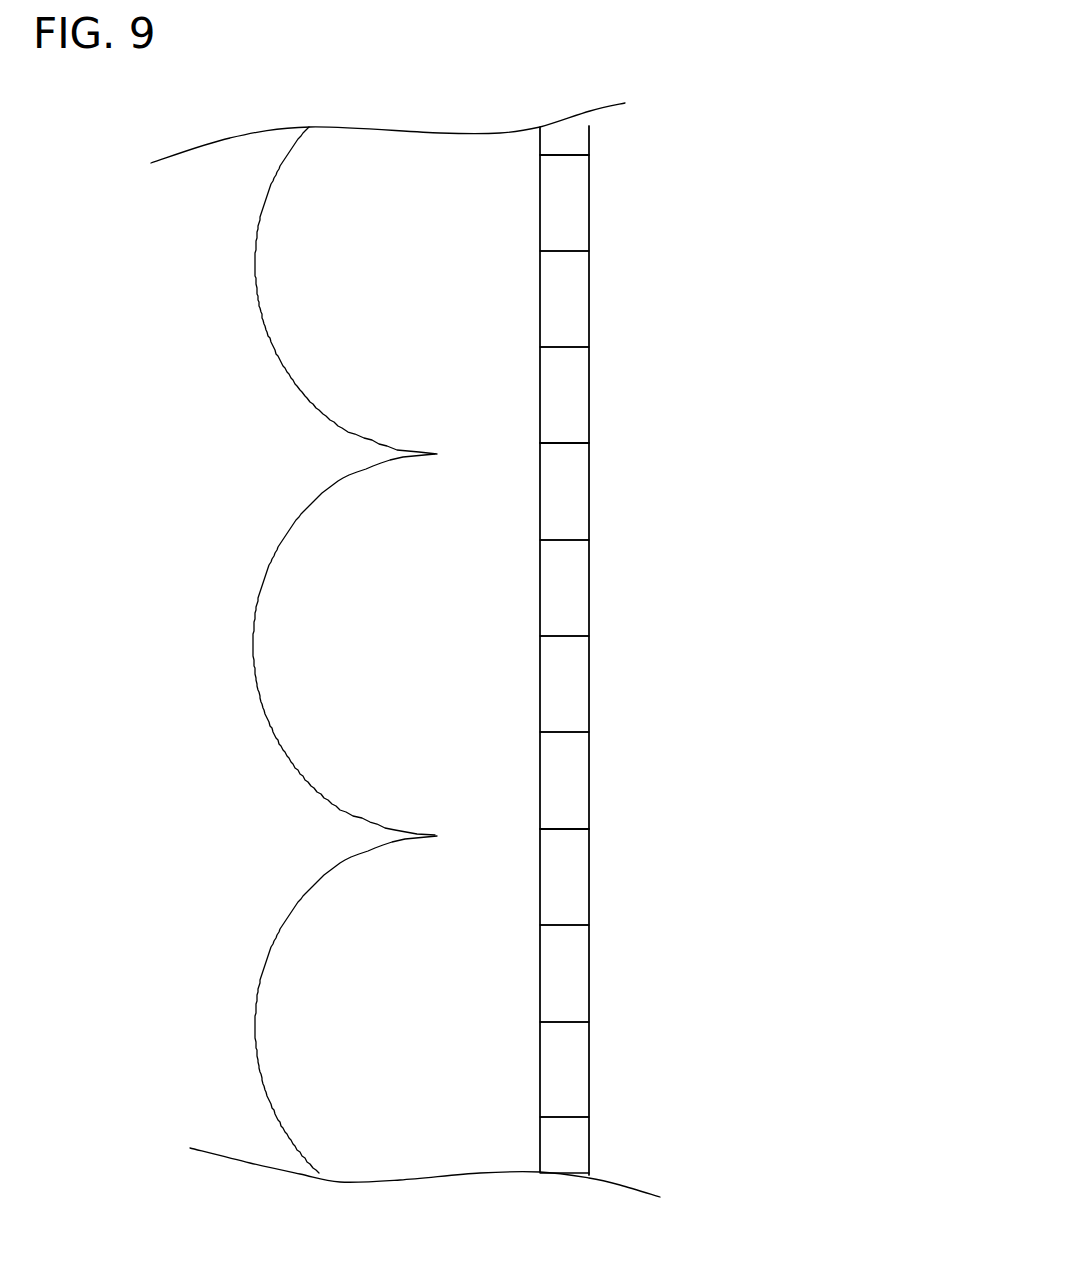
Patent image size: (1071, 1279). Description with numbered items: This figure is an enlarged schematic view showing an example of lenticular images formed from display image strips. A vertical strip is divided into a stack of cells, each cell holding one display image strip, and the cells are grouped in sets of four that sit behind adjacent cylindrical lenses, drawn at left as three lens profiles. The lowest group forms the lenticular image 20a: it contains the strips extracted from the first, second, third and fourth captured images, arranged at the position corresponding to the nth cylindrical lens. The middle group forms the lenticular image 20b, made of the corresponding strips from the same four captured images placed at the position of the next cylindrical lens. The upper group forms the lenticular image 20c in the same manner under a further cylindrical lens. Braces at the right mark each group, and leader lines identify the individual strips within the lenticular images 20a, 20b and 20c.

The lenticular image 20c is at (852, 68).
The lenticular image 20b is at (852, 455).
The lenticular image 20a is at (852, 840).